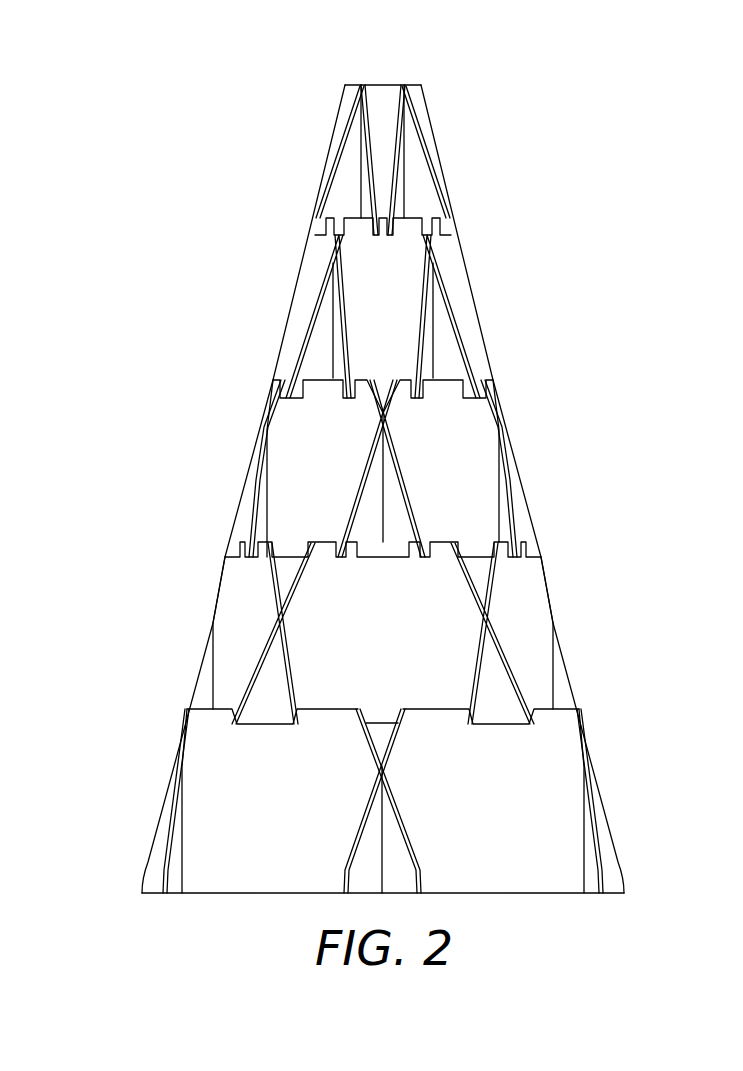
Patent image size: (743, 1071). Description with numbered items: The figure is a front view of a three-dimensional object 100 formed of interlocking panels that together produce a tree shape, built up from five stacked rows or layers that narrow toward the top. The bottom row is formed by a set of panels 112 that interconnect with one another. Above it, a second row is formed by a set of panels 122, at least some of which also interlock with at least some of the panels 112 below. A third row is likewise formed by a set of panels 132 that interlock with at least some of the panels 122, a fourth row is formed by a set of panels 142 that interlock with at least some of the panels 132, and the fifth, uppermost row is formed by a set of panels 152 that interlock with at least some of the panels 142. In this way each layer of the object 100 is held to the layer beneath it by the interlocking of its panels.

The three-dimensional object 100 is at (248, 266).
The set of panels 112 is at (555, 818).
The set of panels 122 is at (455, 640).
The set of panels 132 is at (480, 491).
The set of panels 142 is at (405, 299).
The set of panels 152 is at (420, 181).